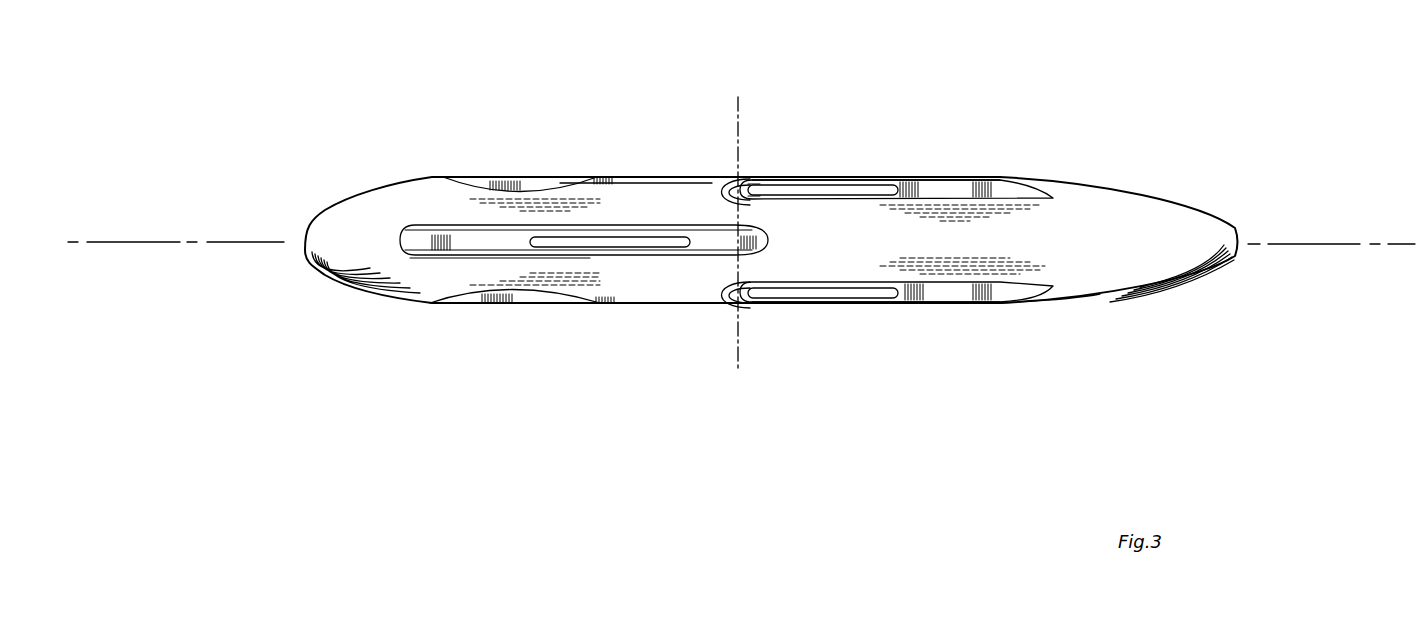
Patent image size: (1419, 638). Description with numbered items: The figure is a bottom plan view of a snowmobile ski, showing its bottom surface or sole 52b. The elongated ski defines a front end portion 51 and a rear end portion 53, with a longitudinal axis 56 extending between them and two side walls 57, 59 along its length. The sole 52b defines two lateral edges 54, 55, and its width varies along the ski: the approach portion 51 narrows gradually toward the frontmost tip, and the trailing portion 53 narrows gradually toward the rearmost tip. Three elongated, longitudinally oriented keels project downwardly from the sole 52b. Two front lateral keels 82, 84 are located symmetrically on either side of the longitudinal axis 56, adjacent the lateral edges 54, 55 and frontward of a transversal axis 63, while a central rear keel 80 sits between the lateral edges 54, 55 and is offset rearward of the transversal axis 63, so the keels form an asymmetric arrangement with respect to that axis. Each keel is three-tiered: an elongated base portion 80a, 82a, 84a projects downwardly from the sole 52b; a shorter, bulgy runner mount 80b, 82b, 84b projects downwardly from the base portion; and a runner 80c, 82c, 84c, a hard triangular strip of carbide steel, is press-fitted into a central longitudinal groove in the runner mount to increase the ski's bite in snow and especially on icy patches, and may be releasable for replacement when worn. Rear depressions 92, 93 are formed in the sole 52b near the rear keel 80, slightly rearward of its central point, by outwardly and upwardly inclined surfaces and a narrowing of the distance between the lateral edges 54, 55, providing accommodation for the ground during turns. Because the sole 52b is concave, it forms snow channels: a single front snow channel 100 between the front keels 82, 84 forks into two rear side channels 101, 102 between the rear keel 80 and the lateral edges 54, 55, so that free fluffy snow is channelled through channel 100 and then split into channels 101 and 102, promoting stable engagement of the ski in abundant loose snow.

The front end portion 51 is at (1142, 206).
The bottom surface 52b is at (1093, 281).
The rear end portion 53 is at (360, 203).
The lateral edge 54 is at (632, 178).
The lateral edge 55 is at (627, 303).
The longitudinal axis 56 is at (1368, 230).
The side wall 57 is at (1007, 178).
The side wall 59 is at (703, 304).
The transversal axis 63 is at (743, 335).
The central rear keel 80 is at (441, 218).
The base portion 80a is at (710, 238).
The runner mount 80b is at (557, 237).
The runner 80c is at (582, 248).
The front lateral keel 82 is at (928, 306).
The base portion 82a is at (972, 305).
The runner mount 82b is at (877, 300).
The runner 82c is at (813, 300).
The front lateral keel 84 is at (947, 184).
The base portion 84a is at (912, 182).
The runner mount 84b is at (765, 180).
The runner 84c is at (840, 185).
The rear depression 92 is at (472, 300).
The rear depression 93 is at (508, 185).
The front snow channel 100 is at (1010, 240).
The rear side channel 101 is at (647, 210).
The rear side channel 102 is at (428, 272).